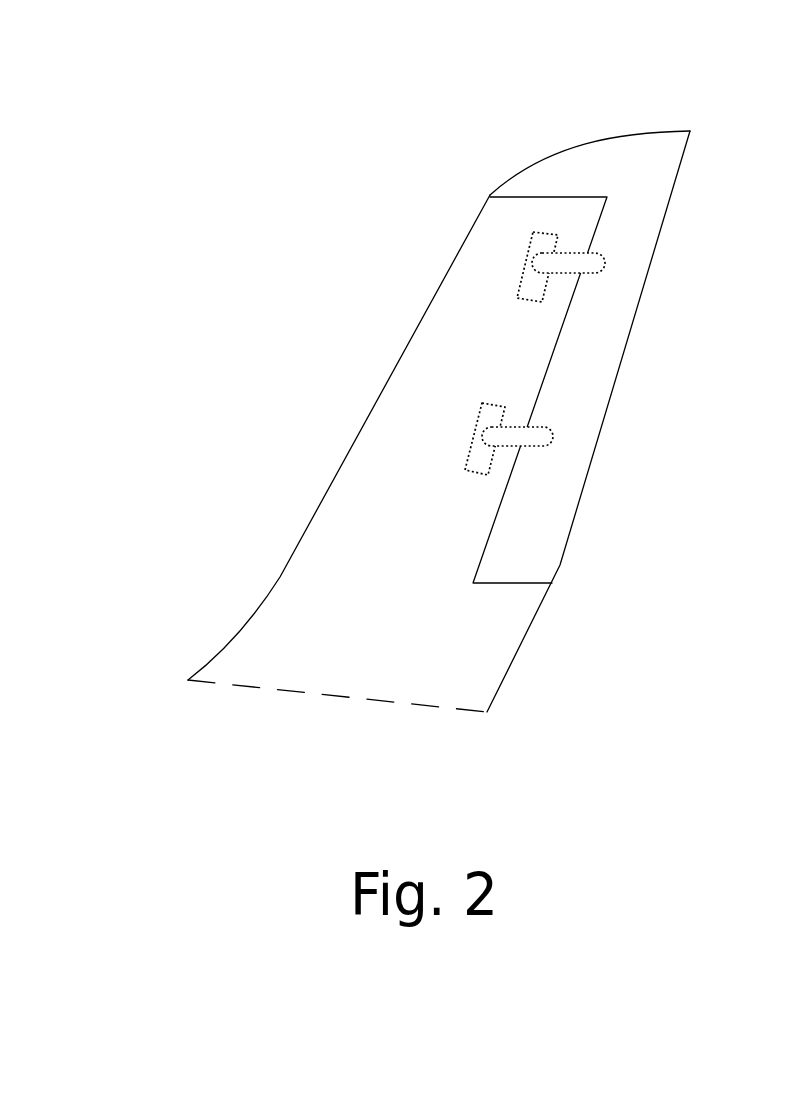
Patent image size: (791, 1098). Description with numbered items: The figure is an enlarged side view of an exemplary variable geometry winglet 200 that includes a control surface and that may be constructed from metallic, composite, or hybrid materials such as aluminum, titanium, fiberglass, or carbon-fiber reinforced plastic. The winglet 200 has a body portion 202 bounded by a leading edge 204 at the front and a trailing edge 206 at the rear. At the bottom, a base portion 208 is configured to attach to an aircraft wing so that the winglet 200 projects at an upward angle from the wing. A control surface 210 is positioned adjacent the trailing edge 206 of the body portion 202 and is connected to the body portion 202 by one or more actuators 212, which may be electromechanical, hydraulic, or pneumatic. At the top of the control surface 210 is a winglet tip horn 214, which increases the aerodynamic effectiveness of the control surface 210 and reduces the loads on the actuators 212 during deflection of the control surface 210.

The variable geometry winglet 200 is at (184, 99).
The body portion 202 is at (470, 325).
The leading edge 204 is at (365, 413).
The trailing edge 206 is at (528, 628).
The base portion 208 is at (353, 675).
The control surface 210 is at (575, 372).
The actuators 212 is at (608, 280).
The winglet tip horn 214 is at (645, 138).